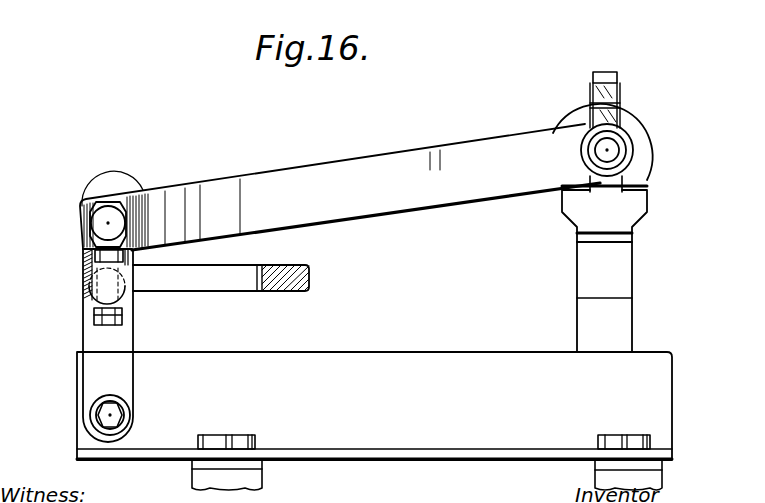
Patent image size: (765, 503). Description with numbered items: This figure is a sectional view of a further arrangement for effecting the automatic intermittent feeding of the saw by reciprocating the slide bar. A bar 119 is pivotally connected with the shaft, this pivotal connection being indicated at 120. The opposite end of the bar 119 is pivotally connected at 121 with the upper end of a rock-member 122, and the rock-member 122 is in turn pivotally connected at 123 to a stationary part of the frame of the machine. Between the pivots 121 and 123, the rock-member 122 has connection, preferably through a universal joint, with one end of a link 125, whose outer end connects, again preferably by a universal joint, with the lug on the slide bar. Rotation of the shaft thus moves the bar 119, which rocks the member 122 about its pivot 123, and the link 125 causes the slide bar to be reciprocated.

The bar 119 is at (478, 153).
The pivotal connection 120 is at (607, 150).
The pivot 121 is at (112, 218).
The rock-member 122 is at (95, 337).
The pivot 123 is at (104, 414).
The link 125 is at (207, 277).